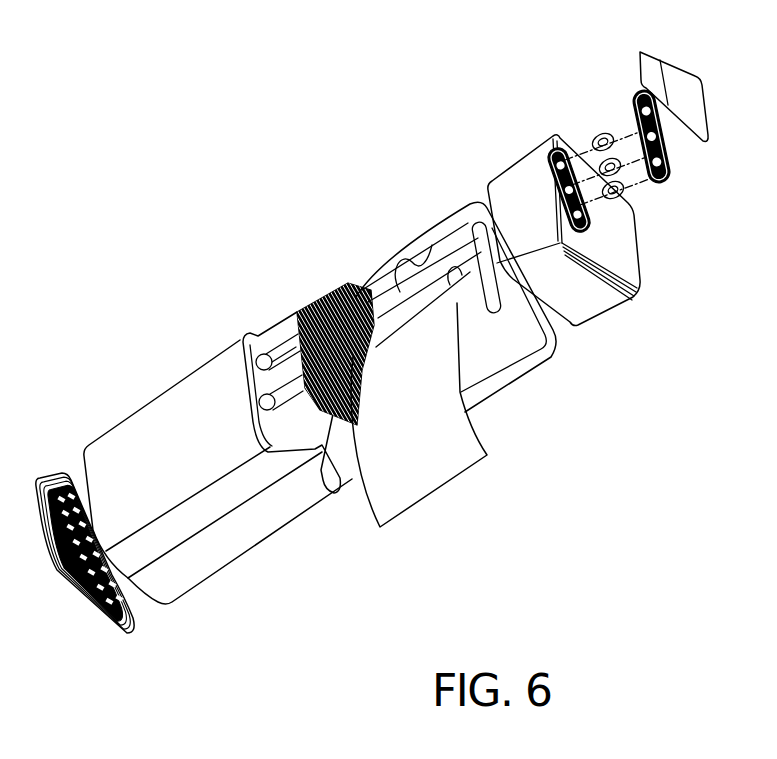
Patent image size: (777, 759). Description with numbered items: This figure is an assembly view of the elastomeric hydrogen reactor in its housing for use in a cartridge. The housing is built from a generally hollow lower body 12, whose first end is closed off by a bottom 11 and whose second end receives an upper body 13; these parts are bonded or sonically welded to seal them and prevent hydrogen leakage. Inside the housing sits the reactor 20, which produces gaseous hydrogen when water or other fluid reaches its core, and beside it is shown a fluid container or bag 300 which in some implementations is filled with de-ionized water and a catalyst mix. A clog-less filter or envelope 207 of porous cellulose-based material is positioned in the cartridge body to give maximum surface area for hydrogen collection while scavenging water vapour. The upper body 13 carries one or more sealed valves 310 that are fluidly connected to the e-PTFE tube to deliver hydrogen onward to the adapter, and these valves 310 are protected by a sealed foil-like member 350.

The bottom 11 is at (87, 615).
The lower body 12 is at (142, 450).
The upper body 13 is at (518, 190).
The reactor 20 is at (306, 253).
The clog-less filter 207 is at (437, 451).
The fluid container or bag 300 is at (488, 366).
The sealed valves 310 is at (595, 104).
The sealed foil-like member 350 is at (688, 121).